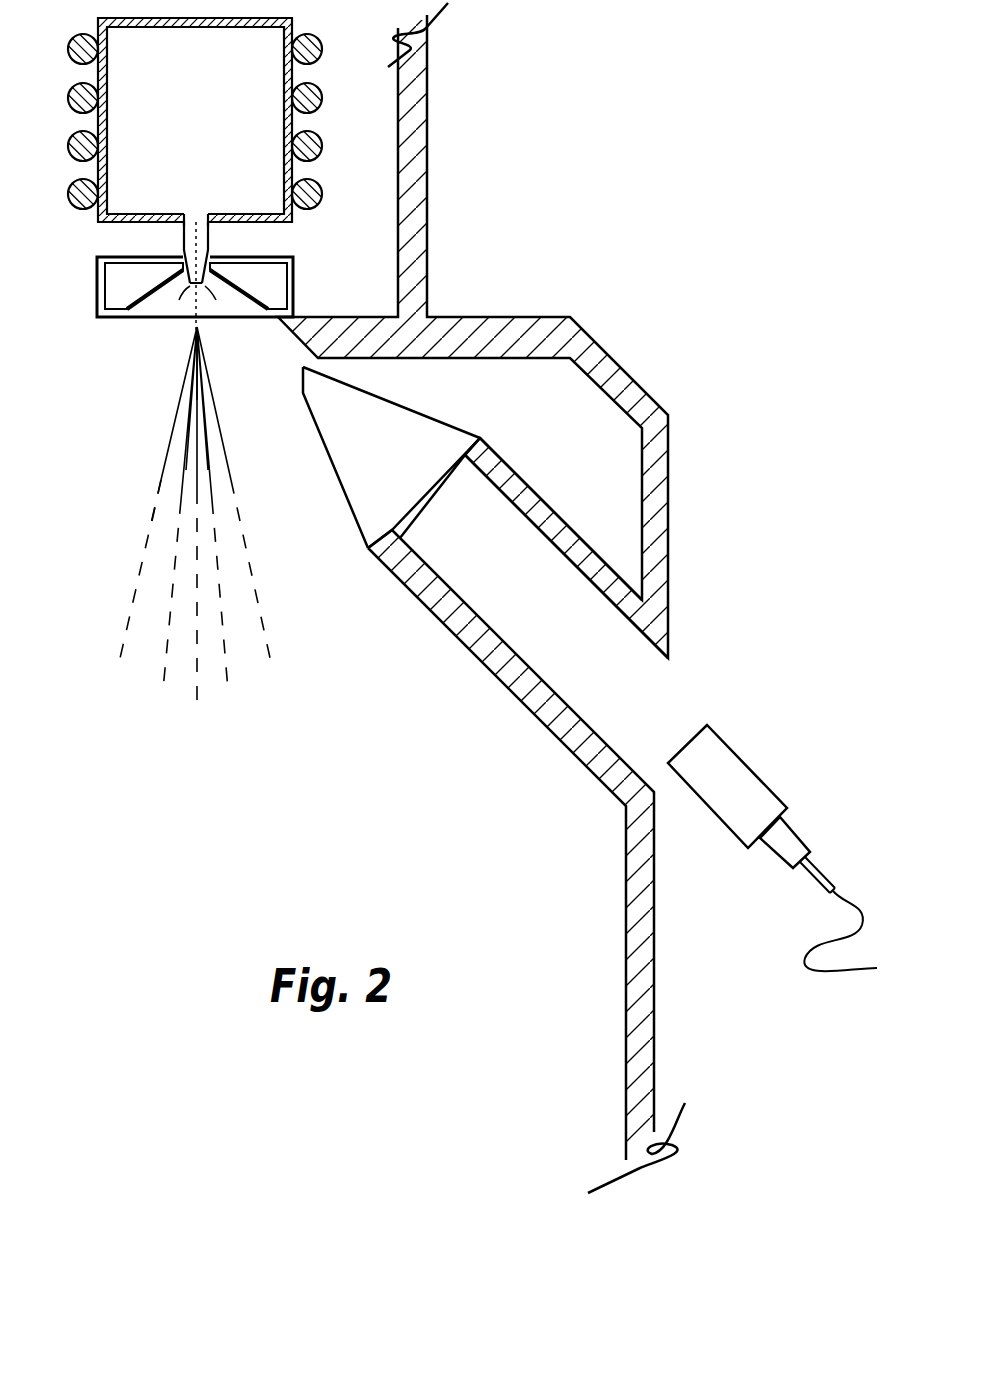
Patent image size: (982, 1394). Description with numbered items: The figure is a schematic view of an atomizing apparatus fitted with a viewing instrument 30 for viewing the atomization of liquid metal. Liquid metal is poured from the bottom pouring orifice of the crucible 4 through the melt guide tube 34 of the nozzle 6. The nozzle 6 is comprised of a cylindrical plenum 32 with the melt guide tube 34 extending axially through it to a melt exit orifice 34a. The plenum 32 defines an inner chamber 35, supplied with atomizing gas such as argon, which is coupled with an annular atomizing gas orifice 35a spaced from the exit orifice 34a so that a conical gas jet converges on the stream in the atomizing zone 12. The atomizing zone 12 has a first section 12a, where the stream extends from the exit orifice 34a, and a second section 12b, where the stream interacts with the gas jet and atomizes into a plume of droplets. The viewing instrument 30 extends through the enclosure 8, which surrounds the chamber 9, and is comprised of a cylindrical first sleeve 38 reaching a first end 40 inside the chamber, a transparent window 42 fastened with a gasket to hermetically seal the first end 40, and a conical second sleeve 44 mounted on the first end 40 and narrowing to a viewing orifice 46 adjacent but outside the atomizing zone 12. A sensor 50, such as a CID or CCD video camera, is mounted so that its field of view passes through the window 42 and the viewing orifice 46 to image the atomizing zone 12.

The crucible 4 is at (297, 22).
The nozzle 6 is at (294, 268).
The enclosure 8 is at (668, 476).
The chamber 9 is at (352, 765).
The atomizing zone 12 is at (172, 338).
The first section 12a is at (227, 363).
The second section 12b is at (172, 398).
The viewing instrument 30 is at (370, 617).
The plenum 32 is at (290, 300).
The melt guide tube 34 is at (210, 242).
The melt exit orifice 34a is at (169, 306).
The inner chamber 35 is at (105, 272).
The annular atomizing gas orifice 35a is at (230, 306).
The first sleeve 38 is at (515, 708).
The first end 40 is at (481, 436).
The window 42 is at (450, 490).
The second sleeve 44 is at (378, 522).
The viewing orifice 46 is at (302, 380).
The sensor 50 is at (738, 773).